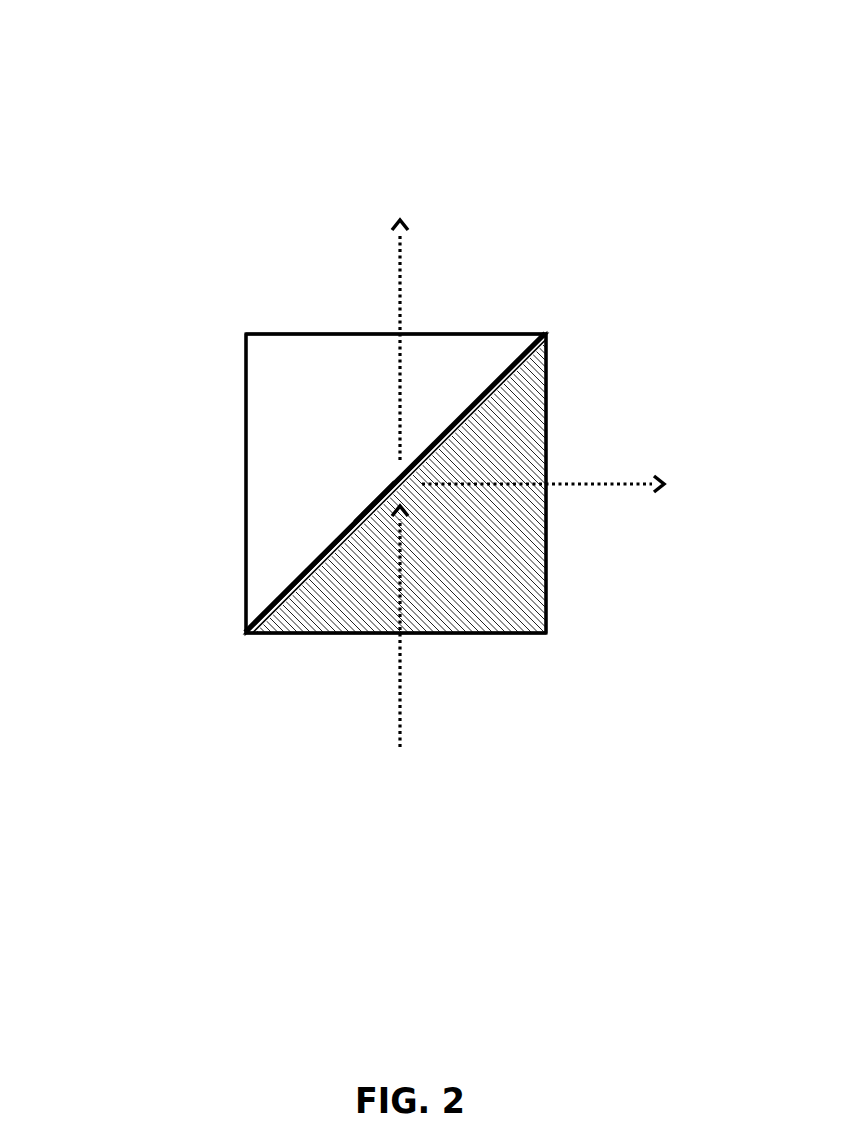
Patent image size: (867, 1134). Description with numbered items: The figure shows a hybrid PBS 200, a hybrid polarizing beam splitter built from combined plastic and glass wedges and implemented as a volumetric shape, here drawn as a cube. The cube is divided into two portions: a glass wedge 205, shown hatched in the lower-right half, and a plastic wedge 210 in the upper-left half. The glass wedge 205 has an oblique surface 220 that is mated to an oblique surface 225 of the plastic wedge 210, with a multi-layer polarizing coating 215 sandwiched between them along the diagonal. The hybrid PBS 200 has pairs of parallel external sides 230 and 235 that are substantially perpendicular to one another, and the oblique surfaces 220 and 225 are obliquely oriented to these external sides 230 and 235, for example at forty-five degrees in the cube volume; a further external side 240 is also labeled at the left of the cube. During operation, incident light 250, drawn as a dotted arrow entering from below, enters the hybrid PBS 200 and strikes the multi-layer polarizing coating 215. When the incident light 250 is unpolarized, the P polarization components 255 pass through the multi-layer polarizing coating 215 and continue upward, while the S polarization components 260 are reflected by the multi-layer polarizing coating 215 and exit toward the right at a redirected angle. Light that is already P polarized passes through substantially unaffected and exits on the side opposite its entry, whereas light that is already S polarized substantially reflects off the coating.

The hybrid PBS 200 is at (139, 67).
The glass wedge 205 is at (528, 616).
The plastic wedge 210 is at (222, 245).
The multi-layer polarizing coating 215 is at (294, 575).
The oblique surface 220 is at (297, 590).
The oblique surface 225 is at (368, 512).
The external sides 230 is at (478, 334).
The external sides 235 is at (546, 415).
The left face 240 is at (246, 425).
The incident light 250 is at (398, 700).
The P polarization components 255 is at (400, 278).
The S polarization components 260 is at (617, 485).